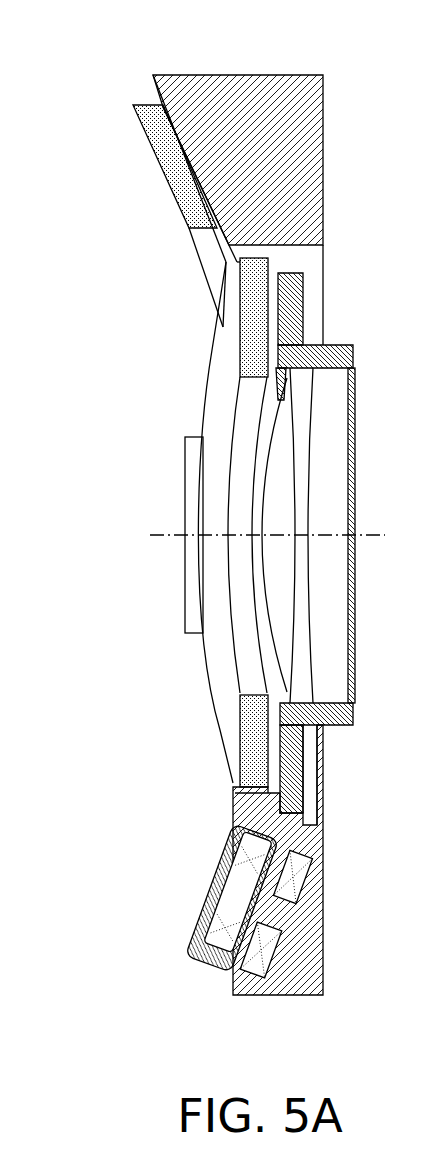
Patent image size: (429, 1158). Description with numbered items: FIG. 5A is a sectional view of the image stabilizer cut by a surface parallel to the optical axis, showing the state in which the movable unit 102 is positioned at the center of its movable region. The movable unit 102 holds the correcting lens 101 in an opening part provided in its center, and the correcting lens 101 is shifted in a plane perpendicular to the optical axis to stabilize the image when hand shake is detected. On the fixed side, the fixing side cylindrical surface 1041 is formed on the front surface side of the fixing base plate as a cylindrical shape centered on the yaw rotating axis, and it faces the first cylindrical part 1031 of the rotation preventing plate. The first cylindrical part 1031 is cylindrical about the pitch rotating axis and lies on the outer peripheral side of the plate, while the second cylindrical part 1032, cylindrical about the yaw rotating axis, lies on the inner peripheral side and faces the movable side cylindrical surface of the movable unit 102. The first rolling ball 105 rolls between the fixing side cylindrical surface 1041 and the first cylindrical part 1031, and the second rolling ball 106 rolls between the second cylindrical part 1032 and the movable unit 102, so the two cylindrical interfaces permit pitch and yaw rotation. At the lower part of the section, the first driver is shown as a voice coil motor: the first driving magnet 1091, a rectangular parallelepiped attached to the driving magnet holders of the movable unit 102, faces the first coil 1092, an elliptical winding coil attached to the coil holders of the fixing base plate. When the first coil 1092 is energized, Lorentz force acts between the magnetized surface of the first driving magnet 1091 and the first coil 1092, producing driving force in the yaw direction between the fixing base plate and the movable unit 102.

The fixing side cylindrical surface 1041 is at (173, 110).
The first cylindrical part 1031 is at (158, 150).
The first rolling ball 105 is at (203, 190).
The second cylindrical part 1032 is at (240, 330).
The second rolling ball 106 is at (268, 308).
The movable unit 102 is at (320, 368).
The correcting lens 101 is at (328, 507).
The first driving magnet 1091 is at (242, 887).
The first coil 1092 is at (285, 892).